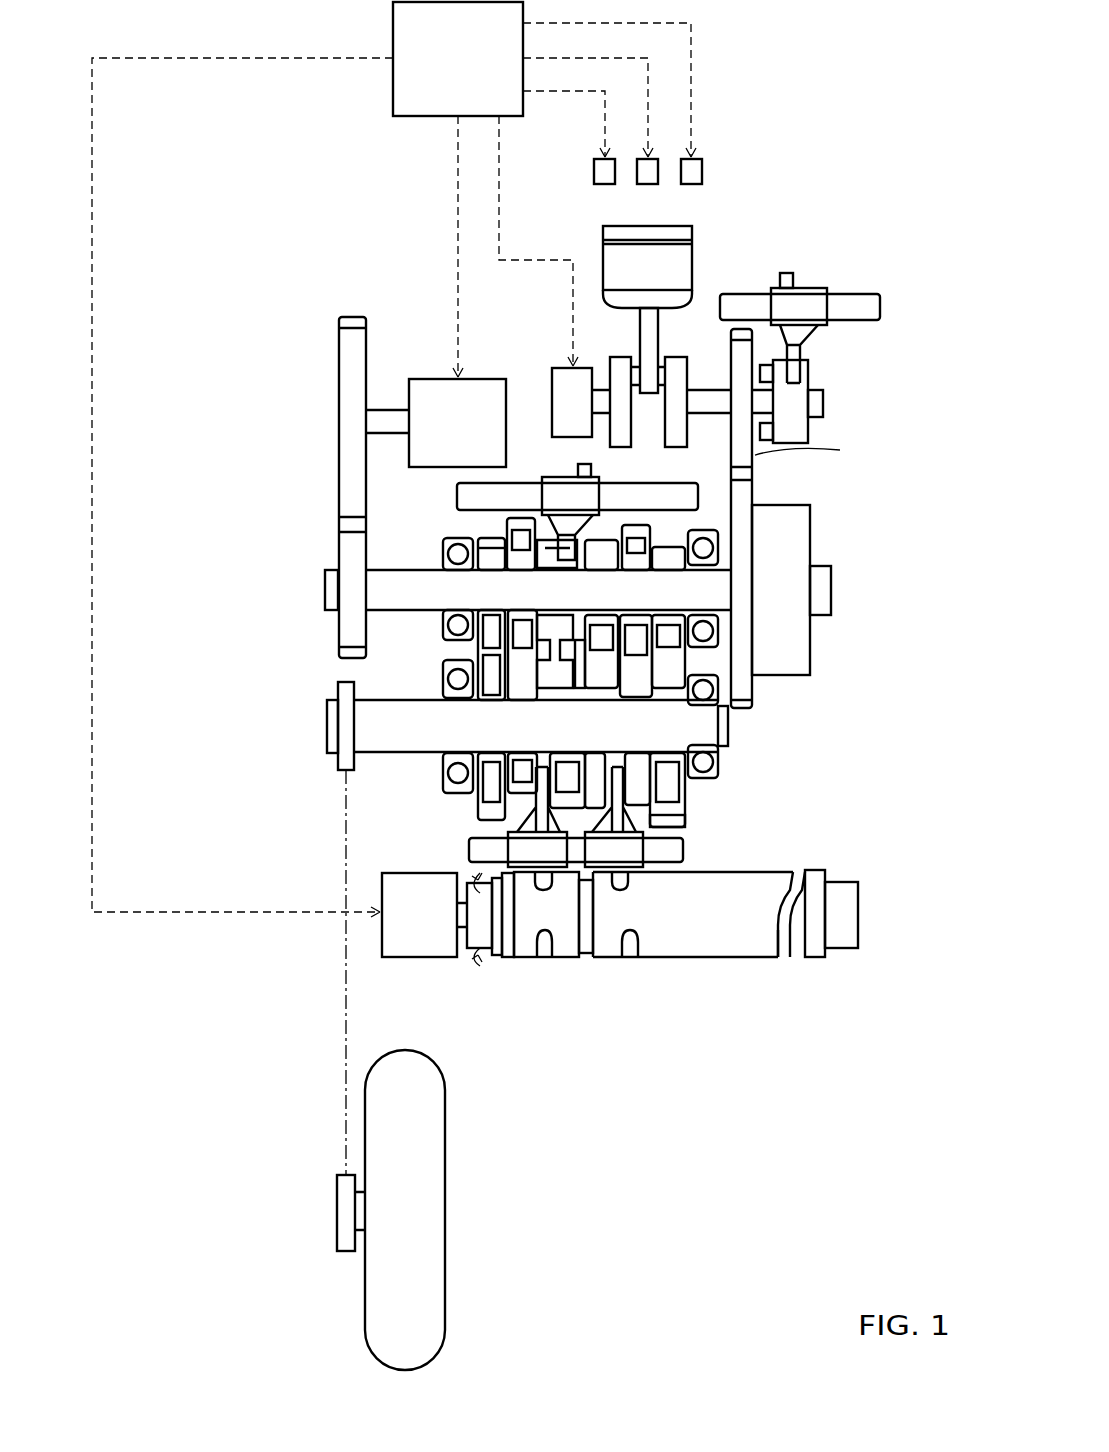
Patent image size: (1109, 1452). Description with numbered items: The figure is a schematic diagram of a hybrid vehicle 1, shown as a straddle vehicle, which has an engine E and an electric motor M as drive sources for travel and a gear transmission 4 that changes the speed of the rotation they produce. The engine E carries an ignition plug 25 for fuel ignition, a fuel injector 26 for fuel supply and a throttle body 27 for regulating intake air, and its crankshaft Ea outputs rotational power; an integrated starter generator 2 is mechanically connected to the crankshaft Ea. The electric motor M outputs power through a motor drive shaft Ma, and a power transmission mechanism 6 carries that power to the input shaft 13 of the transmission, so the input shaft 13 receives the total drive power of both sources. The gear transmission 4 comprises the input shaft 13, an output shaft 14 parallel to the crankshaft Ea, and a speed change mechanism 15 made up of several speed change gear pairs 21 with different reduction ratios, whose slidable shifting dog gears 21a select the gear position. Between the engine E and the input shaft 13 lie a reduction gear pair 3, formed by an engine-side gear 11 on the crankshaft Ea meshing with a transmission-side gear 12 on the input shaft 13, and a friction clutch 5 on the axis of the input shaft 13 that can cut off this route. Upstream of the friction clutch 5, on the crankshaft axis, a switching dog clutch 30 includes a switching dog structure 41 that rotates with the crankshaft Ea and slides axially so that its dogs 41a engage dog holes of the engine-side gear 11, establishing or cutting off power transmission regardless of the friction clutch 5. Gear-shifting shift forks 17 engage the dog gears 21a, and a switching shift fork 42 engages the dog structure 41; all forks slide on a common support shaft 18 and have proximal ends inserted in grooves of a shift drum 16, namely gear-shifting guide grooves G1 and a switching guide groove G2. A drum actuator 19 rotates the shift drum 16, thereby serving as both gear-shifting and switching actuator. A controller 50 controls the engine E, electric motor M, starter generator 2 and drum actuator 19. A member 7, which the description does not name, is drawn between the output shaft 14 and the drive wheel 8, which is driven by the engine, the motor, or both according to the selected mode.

The hybrid vehicle 1 is at (878, 72).
The integrated starter generator 2 is at (552, 392).
The reduction gear pair 3 is at (728, 350).
The gear transmission 4 is at (432, 555).
The friction clutch 5 is at (810, 640).
The power transmission mechanism 6 is at (339, 465).
The chain 7 is at (342, 985).
The drive wheel 8 is at (435, 1285).
The engine-side gear 11 is at (835, 452).
The transmission-side gear 12 is at (752, 487).
The input shaft 13 is at (325, 590).
The output shaft 14 is at (327, 727).
The speed change mechanism 15 is at (440, 677).
The shift drum 16 is at (858, 912).
The gear-shifting shift fork 17 is at (565, 480).
The support shaft 18 is at (881, 306).
The drum actuator 19 is at (423, 957).
The speed change gear pair 21 is at (685, 830).
The shifting dog gear 21a is at (597, 535).
The ignition plug 25 is at (594, 176).
The fuel injector 26 is at (650, 185).
The throttle body 27 is at (703, 172).
The switching dog clutch 30 is at (860, 412).
The switching dog structure 41 is at (810, 430).
The dog 41a is at (761, 365).
The switching shift fork 42 is at (810, 295).
The controller 50 is at (393, 23).
The engine E is at (760, 160).
The crankshaft Ea is at (824, 400).
The gear-shifting guide groove G1 is at (628, 957).
The switching guide groove G2 is at (783, 957).
The electric motor M is at (435, 378).
The motor drive shaft Ma is at (388, 408).